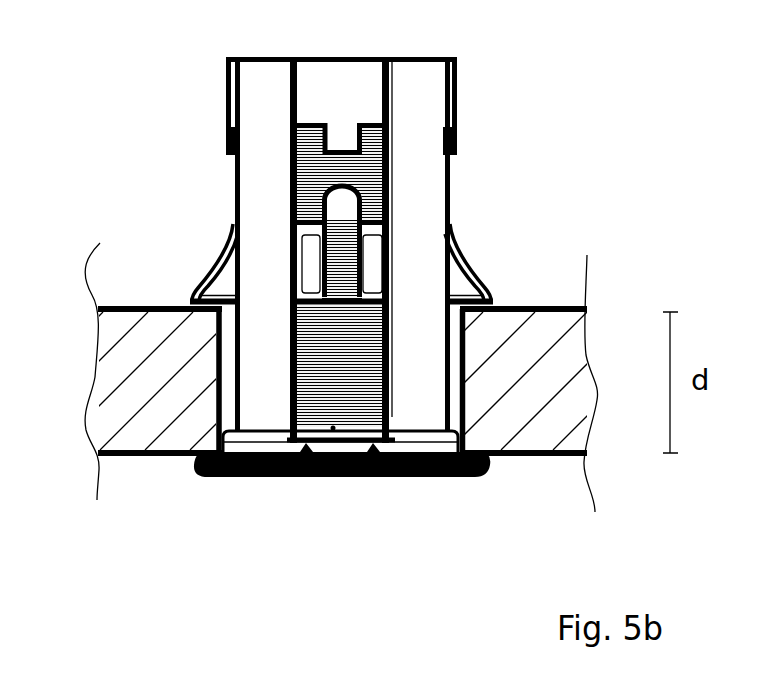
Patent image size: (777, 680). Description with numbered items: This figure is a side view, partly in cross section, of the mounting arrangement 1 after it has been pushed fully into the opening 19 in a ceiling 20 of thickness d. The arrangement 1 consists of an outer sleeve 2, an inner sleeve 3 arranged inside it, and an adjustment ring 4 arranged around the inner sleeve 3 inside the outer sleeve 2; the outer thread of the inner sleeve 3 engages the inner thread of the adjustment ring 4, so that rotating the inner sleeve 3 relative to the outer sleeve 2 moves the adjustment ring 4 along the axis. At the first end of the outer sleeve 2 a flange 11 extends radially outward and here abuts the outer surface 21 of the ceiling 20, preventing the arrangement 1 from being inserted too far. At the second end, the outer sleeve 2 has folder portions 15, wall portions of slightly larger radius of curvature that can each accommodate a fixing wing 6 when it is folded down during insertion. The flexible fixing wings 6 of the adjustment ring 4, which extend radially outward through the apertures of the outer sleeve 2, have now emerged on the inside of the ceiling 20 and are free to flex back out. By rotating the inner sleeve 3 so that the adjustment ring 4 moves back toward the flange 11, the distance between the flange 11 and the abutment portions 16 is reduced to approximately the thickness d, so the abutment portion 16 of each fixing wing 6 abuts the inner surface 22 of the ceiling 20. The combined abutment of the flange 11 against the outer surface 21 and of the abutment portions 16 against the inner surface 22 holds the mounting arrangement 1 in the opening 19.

The mounting arrangement 1 is at (429, 311).
The outer sleeve 2 is at (420, 103).
The inner sleeve 3 is at (390, 157).
The adjustment ring 4 is at (312, 232).
The fixing wings 6 is at (466, 250).
The flange 11 is at (222, 477).
The folder portions 15 is at (380, 97).
The abutment portion 16 is at (490, 299).
The opening 19 is at (487, 470).
The ceiling 20 is at (118, 337).
The outer surface 21 is at (142, 457).
The inner surface 22 is at (167, 306).